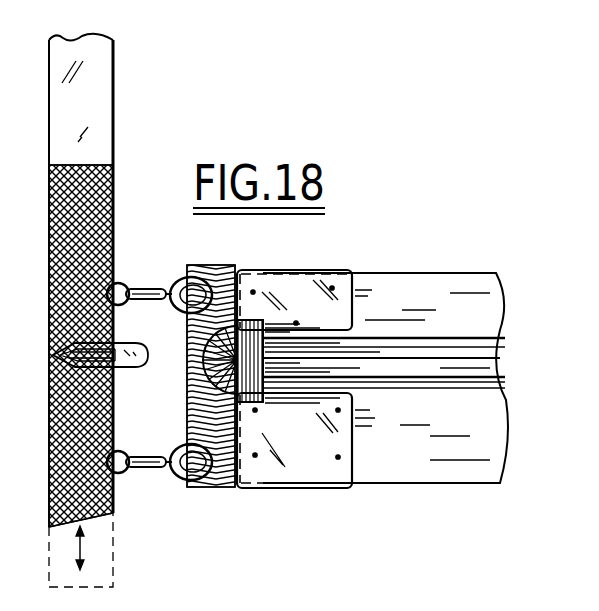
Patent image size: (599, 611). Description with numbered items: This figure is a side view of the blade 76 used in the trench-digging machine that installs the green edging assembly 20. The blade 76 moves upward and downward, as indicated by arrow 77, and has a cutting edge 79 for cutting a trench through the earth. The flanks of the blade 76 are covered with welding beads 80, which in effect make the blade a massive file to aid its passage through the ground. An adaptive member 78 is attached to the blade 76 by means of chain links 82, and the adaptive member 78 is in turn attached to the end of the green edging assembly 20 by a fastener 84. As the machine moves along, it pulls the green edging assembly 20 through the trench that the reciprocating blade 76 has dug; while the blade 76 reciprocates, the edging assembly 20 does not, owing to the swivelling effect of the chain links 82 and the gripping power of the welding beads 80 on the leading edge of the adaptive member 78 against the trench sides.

The green edging assembly 20 is at (372, 378).
The blade 76 is at (106, 135).
The arrow 77 is at (80, 547).
The adaptive member 78 is at (332, 288).
The cutting edge 79 is at (63, 163).
The welding beads 80 is at (186, 383).
The chain links 82 is at (148, 287).
The fastener 84 is at (296, 323).